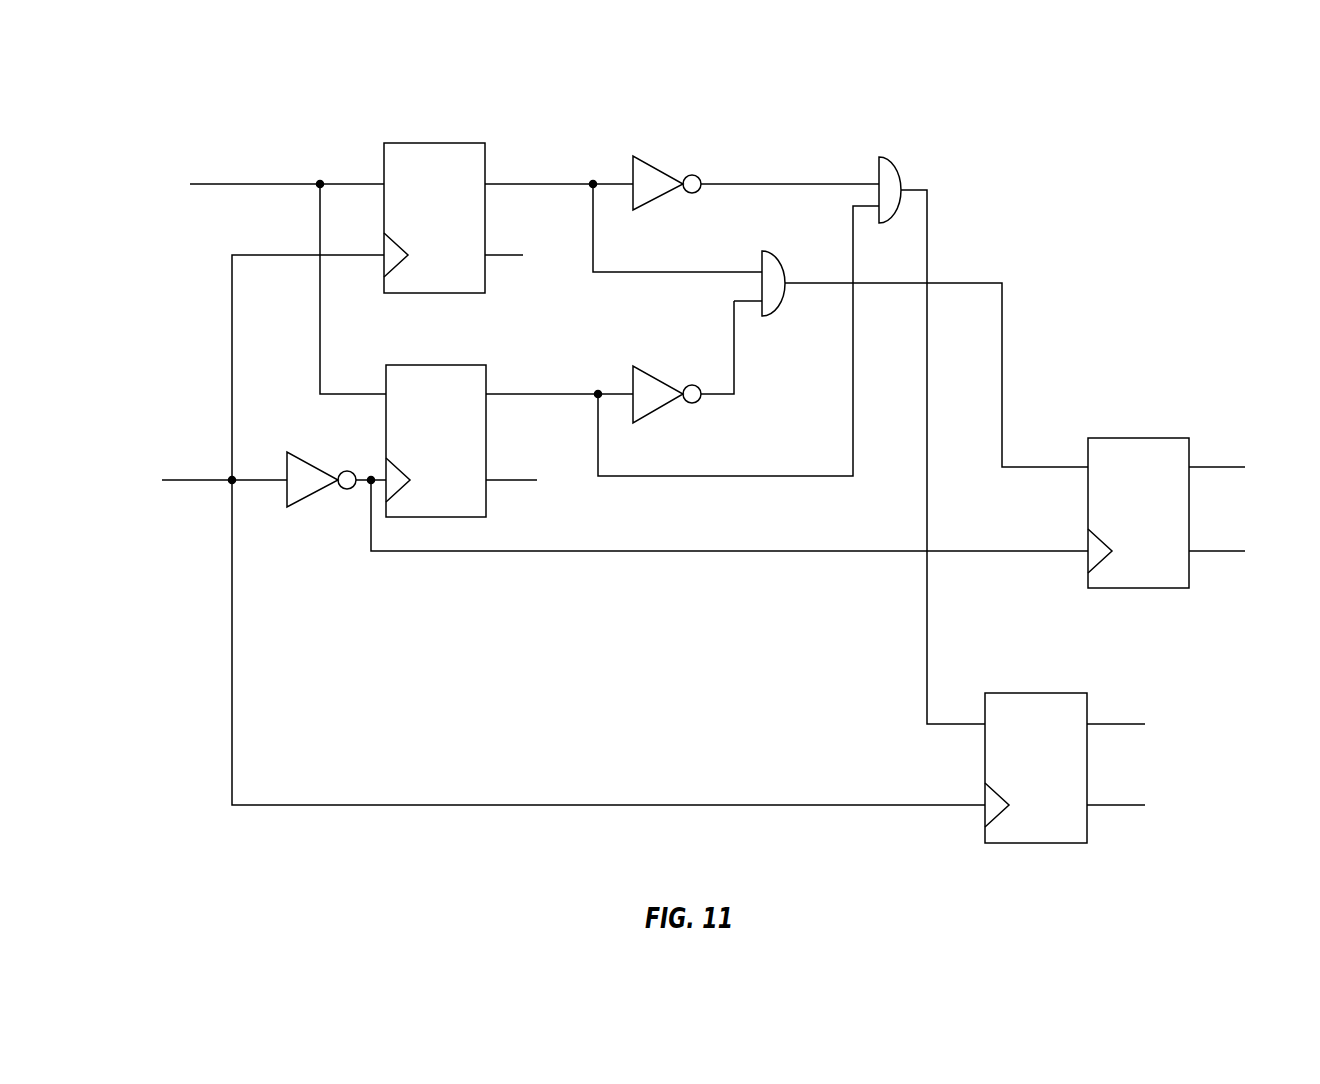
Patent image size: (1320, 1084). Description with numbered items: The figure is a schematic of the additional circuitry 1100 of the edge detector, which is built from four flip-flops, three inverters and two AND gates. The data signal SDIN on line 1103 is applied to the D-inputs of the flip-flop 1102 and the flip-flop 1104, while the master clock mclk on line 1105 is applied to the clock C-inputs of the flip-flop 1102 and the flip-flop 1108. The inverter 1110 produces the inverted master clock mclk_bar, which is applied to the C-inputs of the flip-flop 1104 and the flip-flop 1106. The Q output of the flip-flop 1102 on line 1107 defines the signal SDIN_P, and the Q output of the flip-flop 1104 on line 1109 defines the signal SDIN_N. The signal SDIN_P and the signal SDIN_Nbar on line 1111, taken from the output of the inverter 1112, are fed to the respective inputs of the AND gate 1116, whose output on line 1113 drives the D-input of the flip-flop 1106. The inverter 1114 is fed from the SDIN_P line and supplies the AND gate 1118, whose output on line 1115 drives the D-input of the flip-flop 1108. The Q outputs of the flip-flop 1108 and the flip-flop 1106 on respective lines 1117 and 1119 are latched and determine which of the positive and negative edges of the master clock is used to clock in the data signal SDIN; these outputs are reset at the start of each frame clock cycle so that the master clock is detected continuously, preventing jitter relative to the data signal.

The additional circuitry 1100 is at (628, 102).
The flip-flop 1102 is at (434, 143).
The line 1103 is at (266, 190).
The flip-flop 1104 is at (436, 365).
The line 1105 is at (198, 485).
The flip-flop 1106 is at (1140, 438).
The line 1107 is at (579, 190).
The flip-flop 1108 is at (1037, 693).
The line 1109 is at (579, 400).
The inverter 1110 is at (319, 458).
The line 1111 is at (734, 350).
The inverter 1112 is at (658, 379).
The line 1113 is at (1002, 376).
The inverter 1114 is at (661, 166).
The line 1115 is at (927, 508).
The AND logic gate 1116 is at (779, 257).
The line 1117 is at (1118, 724).
The AND logic gate 1118 is at (896, 161).
The line 1119 is at (1218, 467).